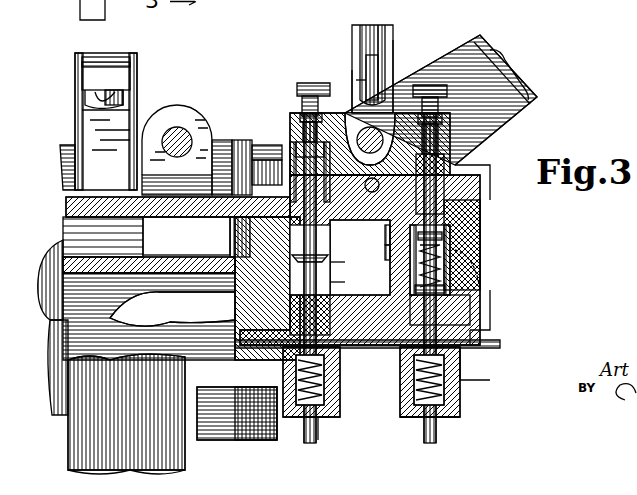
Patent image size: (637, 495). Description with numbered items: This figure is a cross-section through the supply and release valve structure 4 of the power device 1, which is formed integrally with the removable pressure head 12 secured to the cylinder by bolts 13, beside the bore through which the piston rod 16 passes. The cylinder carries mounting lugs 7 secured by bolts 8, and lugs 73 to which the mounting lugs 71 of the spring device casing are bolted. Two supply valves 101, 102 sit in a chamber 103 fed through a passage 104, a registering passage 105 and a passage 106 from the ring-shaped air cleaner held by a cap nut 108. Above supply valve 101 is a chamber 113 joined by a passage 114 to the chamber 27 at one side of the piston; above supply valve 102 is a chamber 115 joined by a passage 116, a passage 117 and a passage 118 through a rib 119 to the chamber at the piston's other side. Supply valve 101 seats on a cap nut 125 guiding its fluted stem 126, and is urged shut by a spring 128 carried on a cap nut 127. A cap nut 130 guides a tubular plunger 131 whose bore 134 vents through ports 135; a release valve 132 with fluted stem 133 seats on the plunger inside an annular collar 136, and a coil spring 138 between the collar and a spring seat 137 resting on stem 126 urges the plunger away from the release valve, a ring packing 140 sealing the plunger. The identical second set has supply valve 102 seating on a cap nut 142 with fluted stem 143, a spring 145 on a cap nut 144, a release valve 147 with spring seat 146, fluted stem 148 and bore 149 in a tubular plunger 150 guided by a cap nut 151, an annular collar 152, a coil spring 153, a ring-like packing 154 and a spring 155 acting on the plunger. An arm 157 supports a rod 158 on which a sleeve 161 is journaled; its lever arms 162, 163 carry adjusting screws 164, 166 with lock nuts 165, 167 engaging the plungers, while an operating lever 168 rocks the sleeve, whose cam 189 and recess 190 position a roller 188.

The power device 1 is at (66, 150).
The supply and release valve structure 4 is at (482, 345).
The mounting lugs 7 is at (170, 110).
The bolts 8 is at (182, 135).
The pressure head 12 is at (265, 145).
The bolts 13 is at (280, 150).
The piston rod 16 is at (55, 262).
The chamber 27 is at (165, 300).
The mounting lugs 71 is at (135, 58).
The lugs 73 is at (135, 78).
The fluid pressure supply valve 101 is at (338, 405).
The fluid pressure supply valve 102 is at (462, 385).
The chamber 103 is at (465, 365).
The passage 104 is at (245, 420).
The passage 105 is at (210, 415).
The passage 106 is at (130, 357).
The cap nut 108 is at (70, 470).
The chamber 113 is at (385, 248).
The passage 114 is at (267, 288).
The chamber 115 is at (442, 260).
The passage 116 is at (232, 150).
The passage 117 is at (242, 150).
The passage 118 is at (125, 200).
The rib 119 is at (66, 205).
The cap nut 125 is at (335, 400).
The fluted stem 126 is at (340, 330).
The cap nut 127 is at (305, 420).
The spring 128 is at (330, 430).
The cap nut 130 is at (303, 135).
The tubular plunger 131 is at (322, 180).
The fluid pressure release valve 132 is at (345, 262).
The fluted stem 133 is at (385, 233).
The bore 134 is at (330, 165).
The ports 135 is at (298, 152).
The annular collar 136 is at (298, 265).
The spring seat 137 is at (337, 315).
The coil spring 138 is at (345, 282).
The ring packing 140 is at (369, 185).
The cap nut 142 is at (480, 330).
The fluted stem 143 is at (470, 310).
The cap nut 144 is at (410, 420).
The spring 145 is at (438, 410).
The spring seat 146 is at (447, 290).
The fluid pressure release valve 147 is at (443, 275).
The fluted stem 148 is at (462, 215).
The bore 149 is at (445, 170).
The tubular plunger 150 is at (480, 185).
The cap nut 151 is at (485, 170).
The annular collar 152 is at (450, 245).
The coil spring 153 is at (440, 140).
The ring-like packing 154 is at (450, 230).
The spring 155 is at (505, 288).
The arm 157 is at (485, 45).
The rod 158 is at (398, 100).
The sleeve 161 is at (380, 160).
The lever arm 162 is at (303, 115).
The lever arm 163 is at (442, 120).
The adjusting screw 164 is at (305, 85).
The lock nut 165 is at (303, 100).
The adjusting screw 166 is at (440, 90).
The lock nut 167 is at (438, 105).
The lever 168 is at (386, 30).
The roller 188 is at (352, 90).
The cam 189 is at (392, 60).
The recess 190 is at (358, 100).